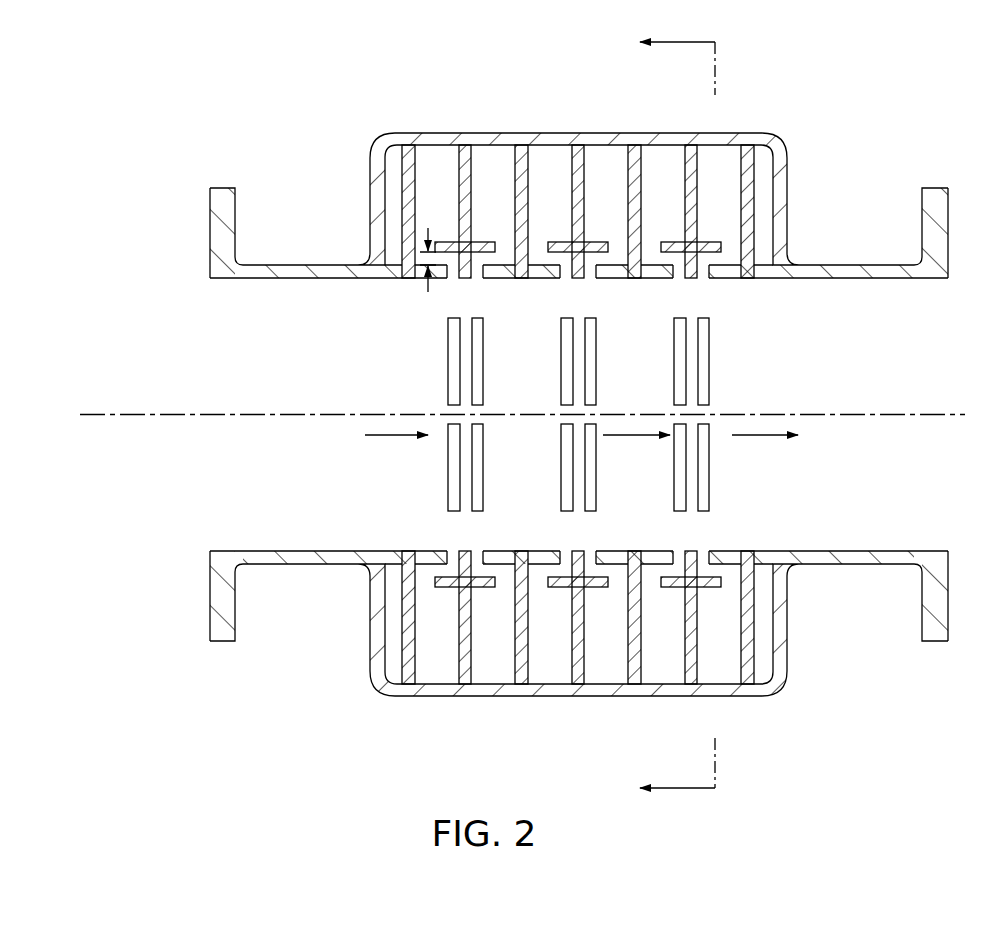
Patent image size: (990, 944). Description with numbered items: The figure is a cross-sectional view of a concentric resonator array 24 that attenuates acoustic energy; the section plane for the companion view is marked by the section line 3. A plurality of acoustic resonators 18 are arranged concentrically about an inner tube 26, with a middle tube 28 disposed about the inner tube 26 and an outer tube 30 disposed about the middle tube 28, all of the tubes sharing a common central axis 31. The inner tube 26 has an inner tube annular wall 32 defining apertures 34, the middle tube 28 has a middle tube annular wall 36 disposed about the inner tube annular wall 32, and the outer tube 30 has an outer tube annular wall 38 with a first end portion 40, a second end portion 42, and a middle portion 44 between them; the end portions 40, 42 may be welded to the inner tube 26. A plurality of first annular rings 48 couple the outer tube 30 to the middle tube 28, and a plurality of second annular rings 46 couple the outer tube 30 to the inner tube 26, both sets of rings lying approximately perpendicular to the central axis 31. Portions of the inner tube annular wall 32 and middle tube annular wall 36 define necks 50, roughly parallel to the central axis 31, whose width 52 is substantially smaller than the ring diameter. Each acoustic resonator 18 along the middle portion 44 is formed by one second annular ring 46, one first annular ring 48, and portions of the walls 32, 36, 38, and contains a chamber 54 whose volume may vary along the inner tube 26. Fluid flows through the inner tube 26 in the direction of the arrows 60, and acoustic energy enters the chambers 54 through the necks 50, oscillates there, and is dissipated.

The section line 3- 3 is at (666, 416).
The acoustic resonator 18 is at (552, 205).
The concentric resonator array 24 is at (883, 81).
The inner tube 26 is at (267, 264).
The middle tube 28 is at (715, 240).
The outer tube 30 is at (610, 205).
The central axis 31 is at (892, 411).
The inner tube annular wall 32 is at (360, 285).
The apertures 34 is at (448, 383).
The middle tube annular wall 36 is at (590, 282).
The outer tube annular wall 38 is at (503, 145).
The first end portion 40 is at (373, 207).
The second end portion 42 is at (785, 250).
The middle portion 44 is at (537, 133).
The second annular rings 46 is at (787, 160).
The first annular rings 48 is at (462, 160).
The neck 50 is at (440, 259).
The width of the neck 52 is at (427, 290).
The chamber 54 is at (646, 145).
The arrows 60 is at (610, 435).